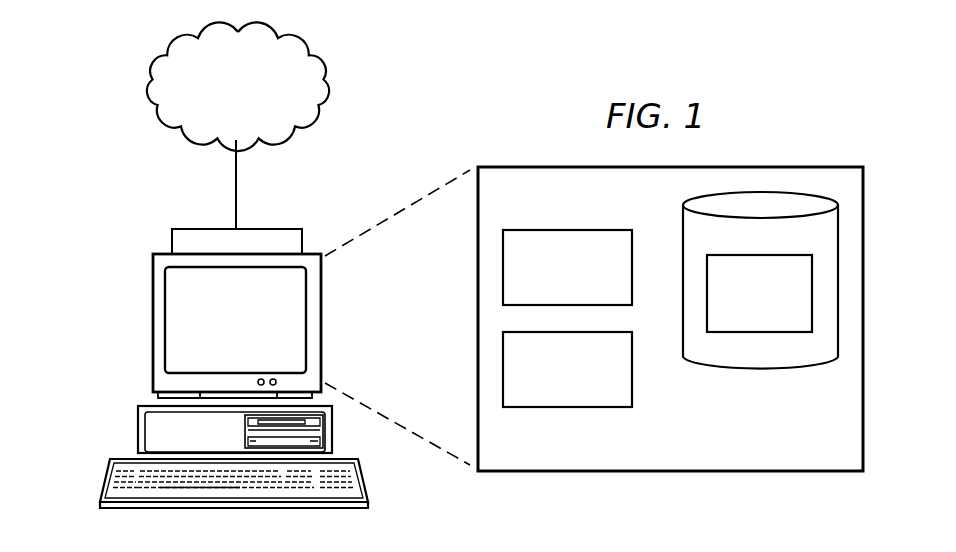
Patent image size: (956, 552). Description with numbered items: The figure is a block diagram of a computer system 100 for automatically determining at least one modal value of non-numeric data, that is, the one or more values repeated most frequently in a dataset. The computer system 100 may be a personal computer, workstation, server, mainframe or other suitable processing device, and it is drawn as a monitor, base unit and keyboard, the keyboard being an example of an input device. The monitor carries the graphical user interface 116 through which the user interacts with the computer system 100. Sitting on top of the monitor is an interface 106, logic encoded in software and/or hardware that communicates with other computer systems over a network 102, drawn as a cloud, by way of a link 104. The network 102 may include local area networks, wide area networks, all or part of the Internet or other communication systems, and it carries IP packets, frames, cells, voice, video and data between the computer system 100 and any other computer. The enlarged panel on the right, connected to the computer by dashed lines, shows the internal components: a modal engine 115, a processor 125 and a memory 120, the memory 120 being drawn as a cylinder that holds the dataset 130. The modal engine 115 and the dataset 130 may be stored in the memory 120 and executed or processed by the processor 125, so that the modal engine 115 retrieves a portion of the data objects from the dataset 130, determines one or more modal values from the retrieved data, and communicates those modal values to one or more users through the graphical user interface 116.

The computer system 100 is at (195, 381).
The network 102 is at (260, 107).
The link 104 is at (236, 200).
The interface 106 is at (172, 240).
The modal engine 115 is at (588, 282).
The graphical user interface 116 is at (165, 318).
The memory 120 is at (760, 318).
The processor 125 is at (588, 383).
The dataset 130 is at (782, 308).